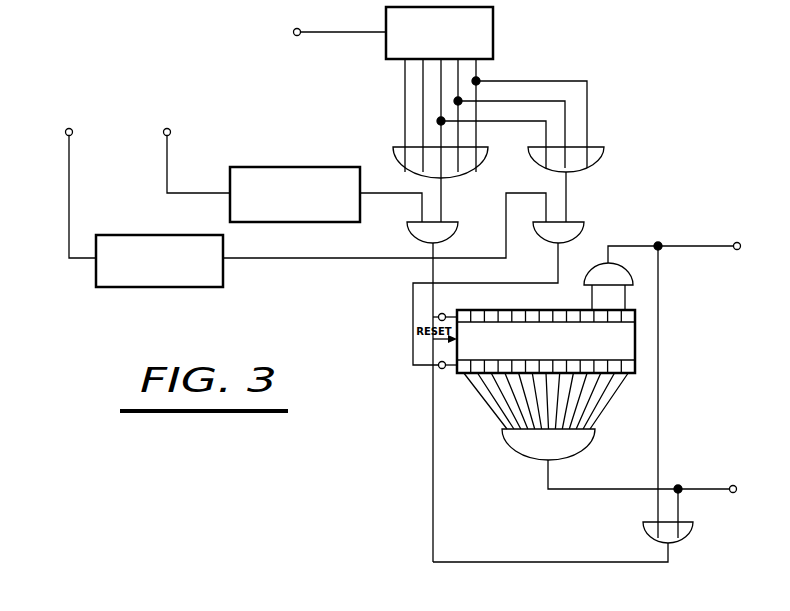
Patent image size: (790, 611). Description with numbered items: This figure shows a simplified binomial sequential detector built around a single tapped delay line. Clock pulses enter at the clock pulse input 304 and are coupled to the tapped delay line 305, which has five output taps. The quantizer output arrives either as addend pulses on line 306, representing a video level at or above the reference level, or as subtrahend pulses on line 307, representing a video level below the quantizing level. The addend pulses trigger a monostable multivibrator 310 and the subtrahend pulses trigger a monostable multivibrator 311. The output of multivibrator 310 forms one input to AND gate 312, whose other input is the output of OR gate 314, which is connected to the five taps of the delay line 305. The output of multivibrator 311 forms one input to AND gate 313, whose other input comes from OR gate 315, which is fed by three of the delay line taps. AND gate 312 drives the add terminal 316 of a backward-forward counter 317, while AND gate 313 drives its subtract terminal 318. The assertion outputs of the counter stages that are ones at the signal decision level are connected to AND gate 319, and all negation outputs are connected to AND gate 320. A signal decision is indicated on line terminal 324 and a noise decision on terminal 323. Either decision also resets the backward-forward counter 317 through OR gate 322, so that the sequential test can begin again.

The clock pulse input terminal 304 is at (349, 22).
The tapped delay line 305 is at (493, 31).
The addend pulse line 306 is at (167, 160).
The subtrahend pulse line 307 is at (69, 160).
The monostable multivibrator 310 is at (343, 167).
The monostable multivibrator 311 is at (180, 233).
The AND gate 312 is at (447, 240).
The AND gate 313 is at (548, 242).
The OR gate 314 is at (444, 177).
The OR gate 315 is at (582, 172).
The add terminal 316 is at (442, 313).
The backward-forward counter 317 is at (636, 336).
The subtract terminal 318 is at (441, 369).
The AND gate 319 is at (603, 266).
The AND gate 320 is at (558, 459).
The OR gate 322 is at (676, 543).
The noise output terminal 323 is at (708, 501).
The signal decision line terminal 324 is at (735, 250).